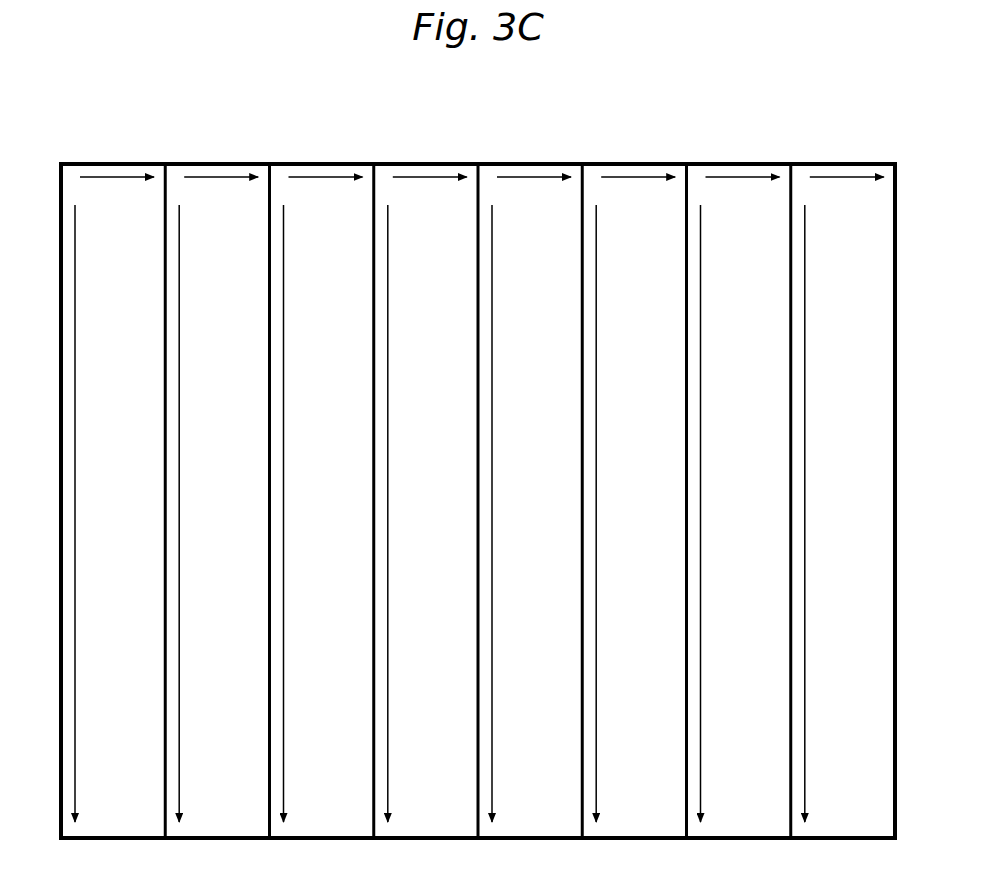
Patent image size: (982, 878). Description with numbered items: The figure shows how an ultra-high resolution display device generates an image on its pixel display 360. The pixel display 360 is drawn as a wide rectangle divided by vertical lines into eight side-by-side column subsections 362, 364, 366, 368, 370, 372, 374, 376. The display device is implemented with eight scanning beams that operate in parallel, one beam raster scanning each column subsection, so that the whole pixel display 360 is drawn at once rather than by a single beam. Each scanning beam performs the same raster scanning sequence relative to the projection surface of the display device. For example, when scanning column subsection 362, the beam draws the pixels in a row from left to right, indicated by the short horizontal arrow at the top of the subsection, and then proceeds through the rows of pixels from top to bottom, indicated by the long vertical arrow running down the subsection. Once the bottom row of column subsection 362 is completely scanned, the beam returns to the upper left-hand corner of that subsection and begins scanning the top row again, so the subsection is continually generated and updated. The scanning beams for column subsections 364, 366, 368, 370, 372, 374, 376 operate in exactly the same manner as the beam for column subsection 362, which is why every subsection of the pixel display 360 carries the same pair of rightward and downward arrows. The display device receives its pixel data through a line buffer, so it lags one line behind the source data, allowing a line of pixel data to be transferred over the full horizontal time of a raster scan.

The pixel display 360 is at (613, 164).
The column subsection 362 is at (89, 496).
The column subsection 364 is at (193, 496).
The column subsection 366 is at (338, 496).
The column subsection 368 is at (442, 496).
The column subsection 370 is at (506, 496).
The column subsection 372 is at (610, 496).
The column subsection 374 is at (714, 496).
The column subsection 376 is at (859, 496).